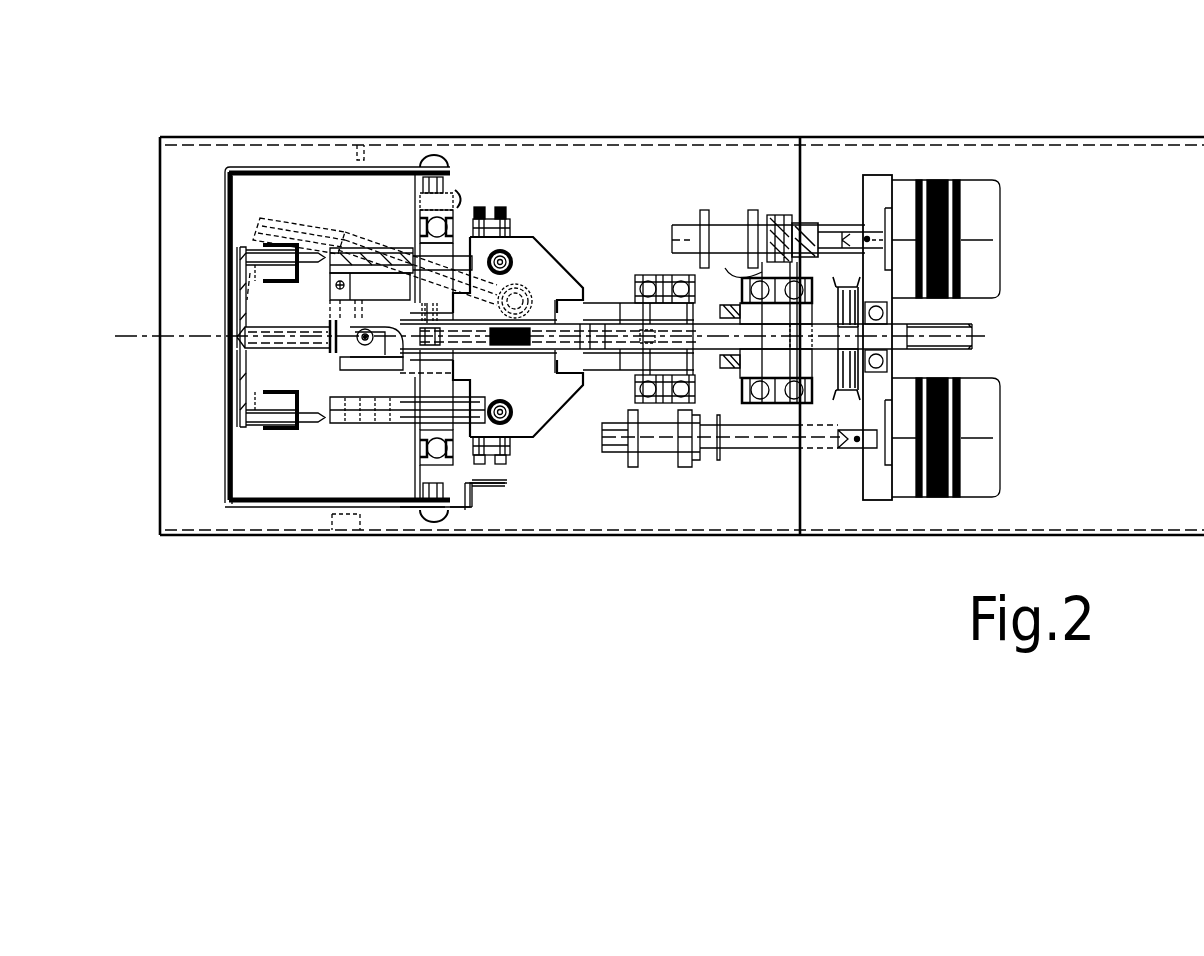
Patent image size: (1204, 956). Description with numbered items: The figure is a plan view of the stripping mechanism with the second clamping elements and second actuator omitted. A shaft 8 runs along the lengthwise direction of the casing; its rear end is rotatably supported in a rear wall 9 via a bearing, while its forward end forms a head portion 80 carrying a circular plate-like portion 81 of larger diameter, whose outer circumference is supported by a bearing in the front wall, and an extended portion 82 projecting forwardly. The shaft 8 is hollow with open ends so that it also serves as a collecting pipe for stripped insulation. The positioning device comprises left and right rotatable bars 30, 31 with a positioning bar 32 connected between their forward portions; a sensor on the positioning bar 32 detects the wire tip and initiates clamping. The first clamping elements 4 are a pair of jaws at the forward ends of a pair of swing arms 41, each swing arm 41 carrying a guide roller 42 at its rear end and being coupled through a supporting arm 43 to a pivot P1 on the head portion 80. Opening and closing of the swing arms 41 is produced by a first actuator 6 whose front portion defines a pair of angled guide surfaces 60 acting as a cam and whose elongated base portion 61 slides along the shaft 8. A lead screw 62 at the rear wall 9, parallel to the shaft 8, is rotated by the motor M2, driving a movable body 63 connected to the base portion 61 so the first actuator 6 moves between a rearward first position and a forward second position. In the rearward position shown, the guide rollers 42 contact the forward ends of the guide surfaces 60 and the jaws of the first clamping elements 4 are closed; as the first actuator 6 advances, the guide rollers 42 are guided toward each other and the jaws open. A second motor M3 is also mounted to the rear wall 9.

The first clamping elements 4 is at (244, 318).
The first actuator 6 is at (578, 270).
The shaft 8 is at (618, 330).
The rear wall 9 is at (878, 490).
The rotatable bar 30 is at (302, 506).
The rotatable bar 31 is at (302, 166).
The positioning bar 32 is at (240, 275).
The swing arm 41 is at (398, 253).
The guide roller 42 is at (540, 240).
The supporting arm 43 is at (390, 362).
The angled guide surfaces 60 is at (520, 292).
The base portion 61 is at (585, 395).
The lead screw 62 is at (830, 240).
The movable body 63 is at (716, 280).
The head portion 80 is at (360, 346).
The circular plate-like portion 81 is at (446, 300).
The extended portion 82 is at (275, 427).
The pivot P1 is at (362, 342).
The motor M2 is at (980, 222).
The motor M3 is at (980, 455).